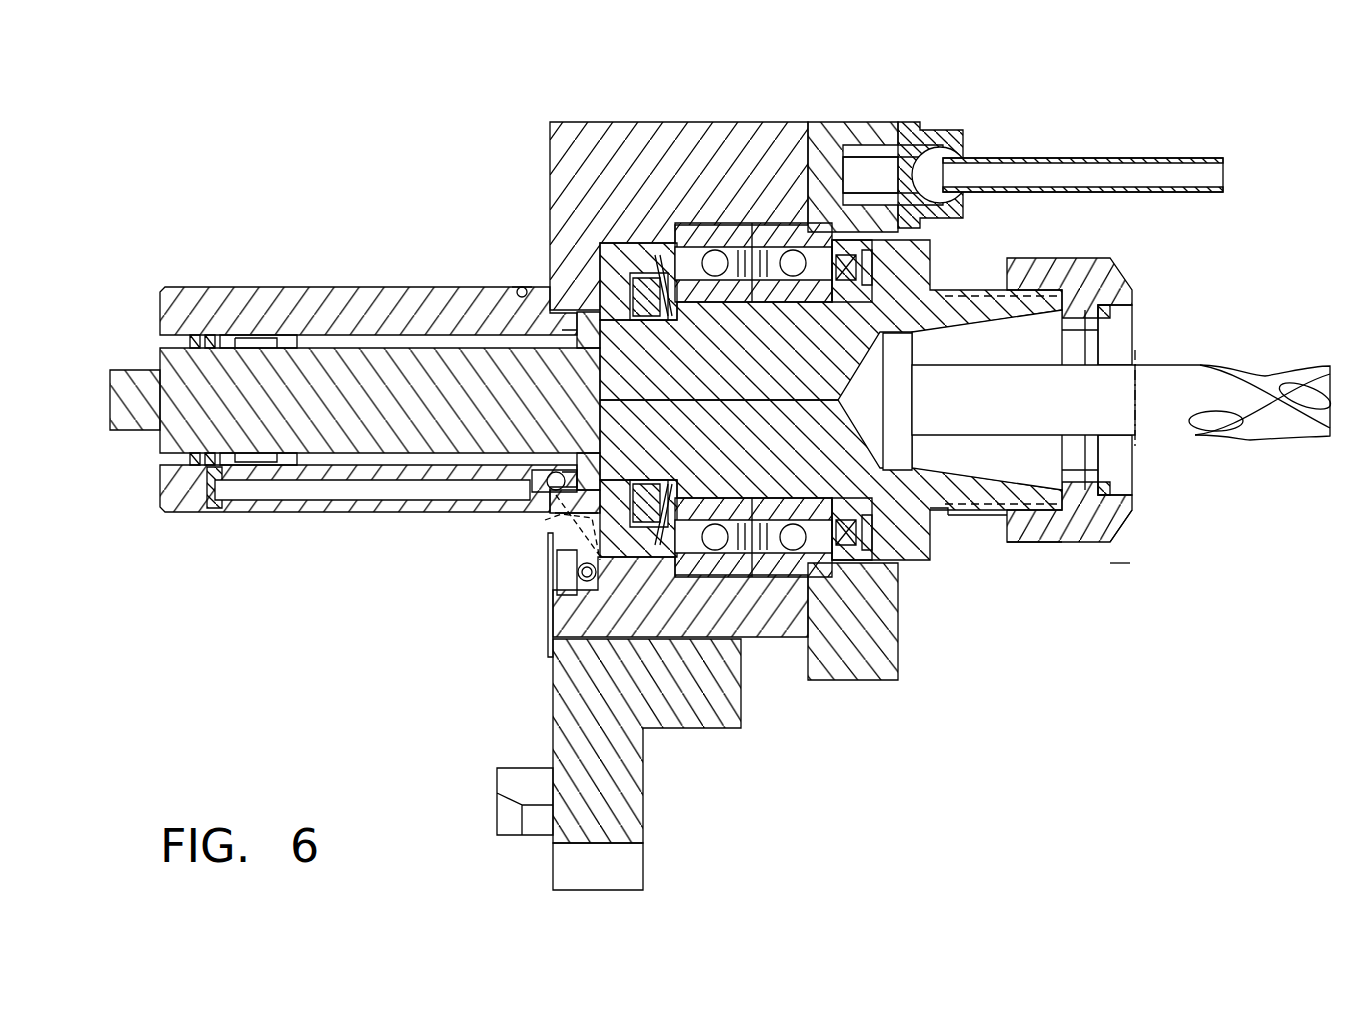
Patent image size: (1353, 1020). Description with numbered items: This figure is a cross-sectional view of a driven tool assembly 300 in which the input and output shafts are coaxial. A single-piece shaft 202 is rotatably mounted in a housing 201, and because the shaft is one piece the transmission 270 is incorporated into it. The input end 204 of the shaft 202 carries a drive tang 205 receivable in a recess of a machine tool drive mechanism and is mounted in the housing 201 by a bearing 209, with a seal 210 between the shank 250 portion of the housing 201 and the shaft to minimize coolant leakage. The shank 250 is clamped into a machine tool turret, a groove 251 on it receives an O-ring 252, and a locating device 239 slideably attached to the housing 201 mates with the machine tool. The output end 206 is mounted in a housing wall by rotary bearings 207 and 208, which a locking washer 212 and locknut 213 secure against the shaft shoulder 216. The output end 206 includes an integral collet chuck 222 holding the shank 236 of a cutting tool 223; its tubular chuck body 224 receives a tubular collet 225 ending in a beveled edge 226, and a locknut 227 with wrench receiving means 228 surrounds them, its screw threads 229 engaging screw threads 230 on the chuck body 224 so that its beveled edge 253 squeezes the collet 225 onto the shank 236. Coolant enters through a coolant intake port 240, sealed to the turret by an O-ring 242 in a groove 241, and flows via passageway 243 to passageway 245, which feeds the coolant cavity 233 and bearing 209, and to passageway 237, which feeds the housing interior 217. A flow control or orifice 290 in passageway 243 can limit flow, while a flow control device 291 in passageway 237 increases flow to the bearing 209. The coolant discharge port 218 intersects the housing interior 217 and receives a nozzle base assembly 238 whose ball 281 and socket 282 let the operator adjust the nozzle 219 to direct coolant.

The driven tool assembly 300 is at (318, 124).
The housing 201 is at (600, 122).
The shaft 202 is at (495, 385).
The input end 204 is at (320, 402).
The drive tang 205 is at (118, 440).
The output end 206 is at (793, 409).
The rotary bearing 207 is at (712, 225).
The rotary bearing 208 is at (775, 235).
The bearing 209 is at (256, 338).
The seal 210 is at (198, 338).
The locking washer 212 is at (655, 268).
The locknut 213 is at (660, 285).
The shaft shoulder 216 is at (812, 300).
The housing interior 217 is at (628, 560).
The coolant discharge port 218 is at (840, 165).
The nozzle 219 is at (1160, 160).
The collet chuck 222 is at (1112, 563).
The cutting tool 223 is at (1250, 370).
The chuck body 224 is at (985, 500).
The collet 225 is at (1115, 355).
The beveled edge 226 is at (1112, 318).
The locknut 227 is at (1120, 535).
The wrench receiving means 228 is at (1070, 258).
The screw threads 229 is at (1040, 525).
The screw threads 230 is at (975, 515).
The coolant cavity 233 is at (212, 492).
The shank 236 is at (972, 450).
The passageway 237 is at (575, 465).
The nozzle base assembly 238 is at (975, 121).
The locating device 239 is at (612, 795).
The coolant intake port 240 is at (524, 571).
The groove 241 is at (548, 630).
The O-ring 242 is at (557, 598).
The passageway 243 is at (548, 560).
The passageway 245 is at (242, 468).
The shank 250 is at (428, 287).
The groove 251 is at (519, 287).
The O-ring 252 is at (523, 285).
The beveled edge 253 is at (1132, 455).
The transmission 270 is at (345, 466).
The ball 281 is at (970, 150).
The socket 282 is at (958, 128).
The flow control or orifice 290 is at (545, 521).
The flow control device 291 is at (604, 470).